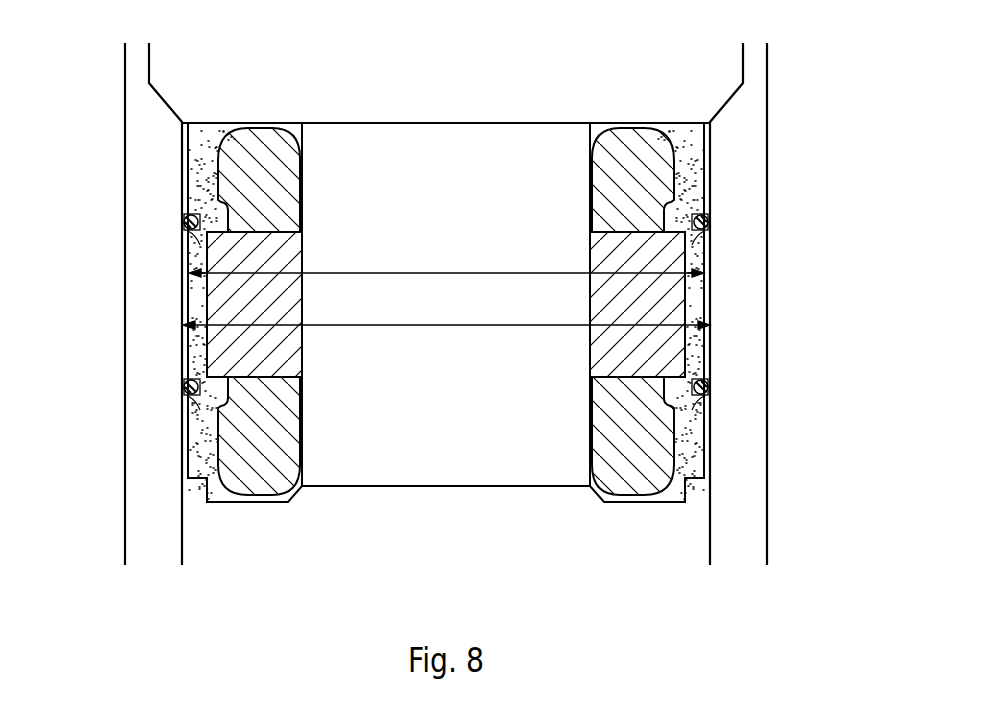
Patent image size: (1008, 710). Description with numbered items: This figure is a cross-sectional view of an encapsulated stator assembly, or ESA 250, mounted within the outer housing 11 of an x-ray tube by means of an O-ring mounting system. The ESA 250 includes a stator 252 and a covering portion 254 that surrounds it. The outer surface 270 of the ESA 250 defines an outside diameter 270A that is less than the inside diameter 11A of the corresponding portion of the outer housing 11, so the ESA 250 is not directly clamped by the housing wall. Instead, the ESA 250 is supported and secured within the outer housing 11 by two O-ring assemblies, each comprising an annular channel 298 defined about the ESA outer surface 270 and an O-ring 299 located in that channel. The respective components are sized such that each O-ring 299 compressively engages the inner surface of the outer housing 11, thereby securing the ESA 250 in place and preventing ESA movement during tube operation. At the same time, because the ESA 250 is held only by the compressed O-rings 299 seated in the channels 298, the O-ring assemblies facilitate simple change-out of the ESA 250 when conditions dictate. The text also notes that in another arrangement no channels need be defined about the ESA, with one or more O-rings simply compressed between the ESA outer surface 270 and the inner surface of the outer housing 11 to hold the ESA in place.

The outer housing 11 is at (125, 311).
The inside diameter 11A is at (402, 325).
The ESA 250 is at (469, 301).
The stator 252 is at (663, 290).
The covering portion 254 is at (203, 166).
The outer surface 270 is at (710, 458).
The outside diameter 270A is at (402, 273).
The annular channel 298 is at (200, 234).
The O-ring 299 is at (186, 219).